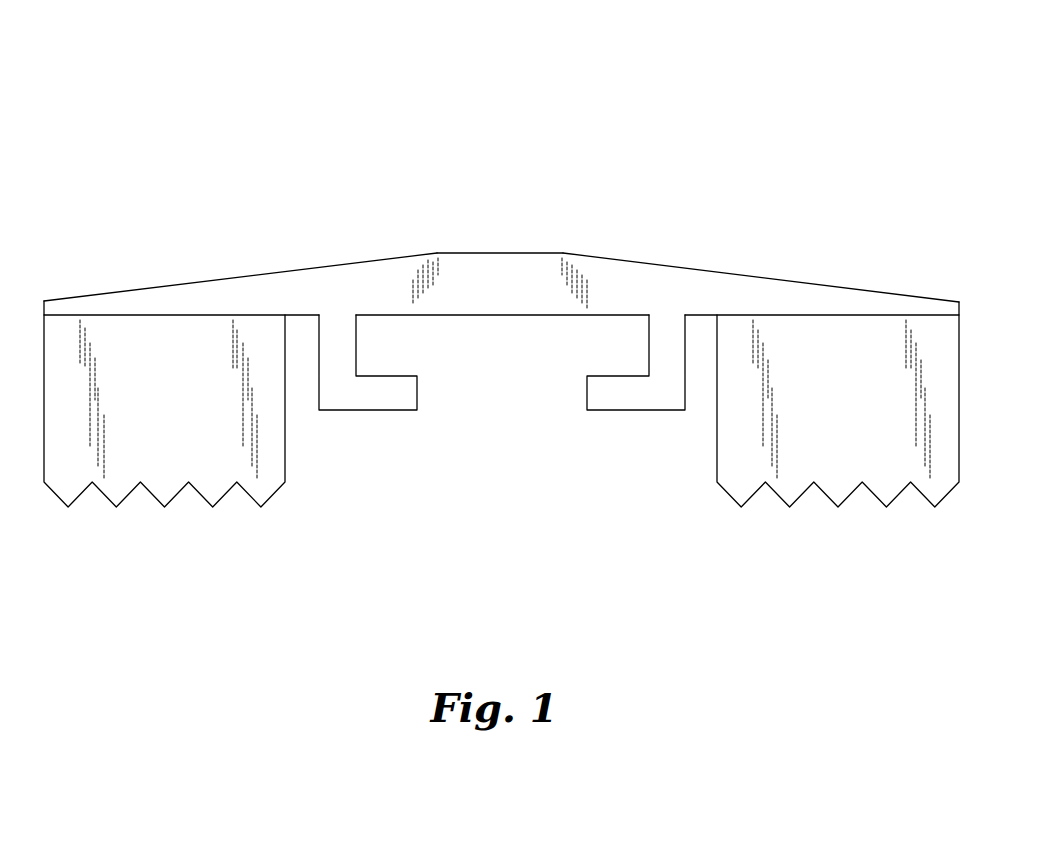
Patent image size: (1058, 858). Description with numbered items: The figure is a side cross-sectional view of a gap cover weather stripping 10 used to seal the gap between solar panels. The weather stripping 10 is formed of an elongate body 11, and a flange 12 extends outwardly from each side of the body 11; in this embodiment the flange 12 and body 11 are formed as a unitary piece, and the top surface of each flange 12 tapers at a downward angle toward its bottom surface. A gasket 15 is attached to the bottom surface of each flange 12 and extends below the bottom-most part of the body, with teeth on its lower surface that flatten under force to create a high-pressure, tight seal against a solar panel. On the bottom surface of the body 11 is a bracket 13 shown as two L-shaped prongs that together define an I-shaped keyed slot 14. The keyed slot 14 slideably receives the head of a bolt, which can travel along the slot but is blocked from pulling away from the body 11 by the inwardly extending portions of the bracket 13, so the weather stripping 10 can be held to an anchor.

The gap cover weather stripping 10 is at (796, 138).
The elongate body 11 is at (521, 253).
The flange 12 is at (232, 278).
The bracket 13 is at (363, 411).
The keyed slot 14 is at (492, 348).
The gasket 15 is at (175, 497).